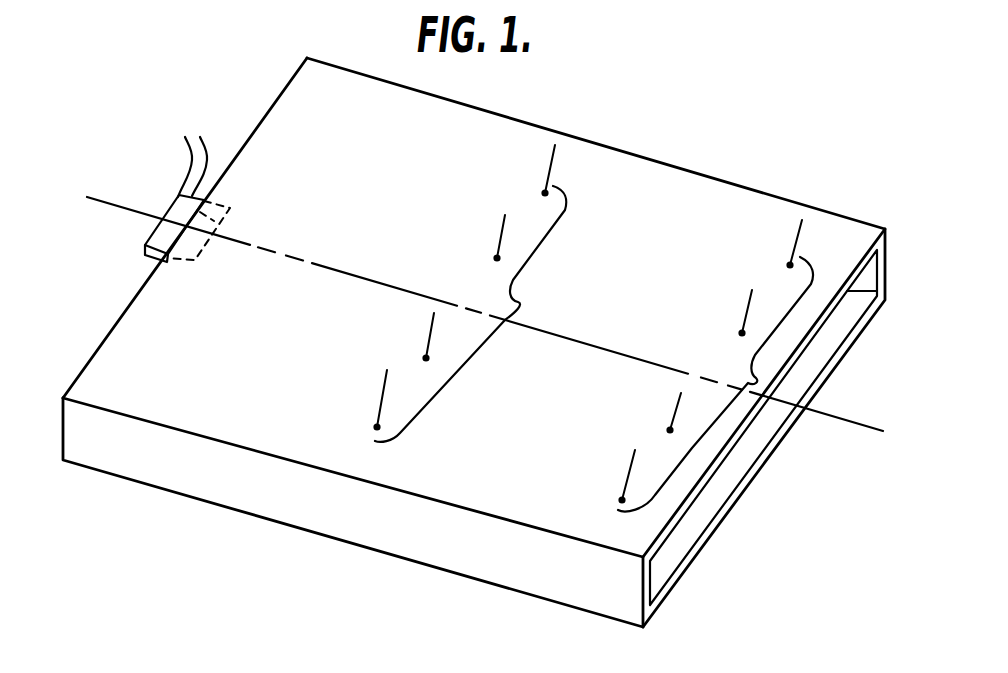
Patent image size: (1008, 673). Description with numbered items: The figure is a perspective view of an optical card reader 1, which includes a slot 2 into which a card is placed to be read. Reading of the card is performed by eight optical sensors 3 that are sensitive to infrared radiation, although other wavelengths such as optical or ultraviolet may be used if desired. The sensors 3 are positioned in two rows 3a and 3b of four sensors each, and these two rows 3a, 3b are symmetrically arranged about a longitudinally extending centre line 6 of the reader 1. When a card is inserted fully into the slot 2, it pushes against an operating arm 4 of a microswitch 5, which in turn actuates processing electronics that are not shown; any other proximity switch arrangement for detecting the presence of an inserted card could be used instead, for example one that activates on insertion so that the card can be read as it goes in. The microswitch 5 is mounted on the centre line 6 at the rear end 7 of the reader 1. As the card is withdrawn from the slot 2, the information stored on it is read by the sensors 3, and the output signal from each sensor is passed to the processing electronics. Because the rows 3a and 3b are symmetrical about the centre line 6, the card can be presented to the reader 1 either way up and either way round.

The card reader 1 is at (221, 508).
The slot 2 is at (686, 536).
The optical sensors 3 is at (545, 193).
The row of sensors 3a is at (524, 302).
The row of sensors 3b is at (748, 383).
The operating arm 4 is at (221, 215).
The microswitch 5 is at (174, 209).
The centre line 6 is at (857, 380).
The rear end 7 is at (131, 303).